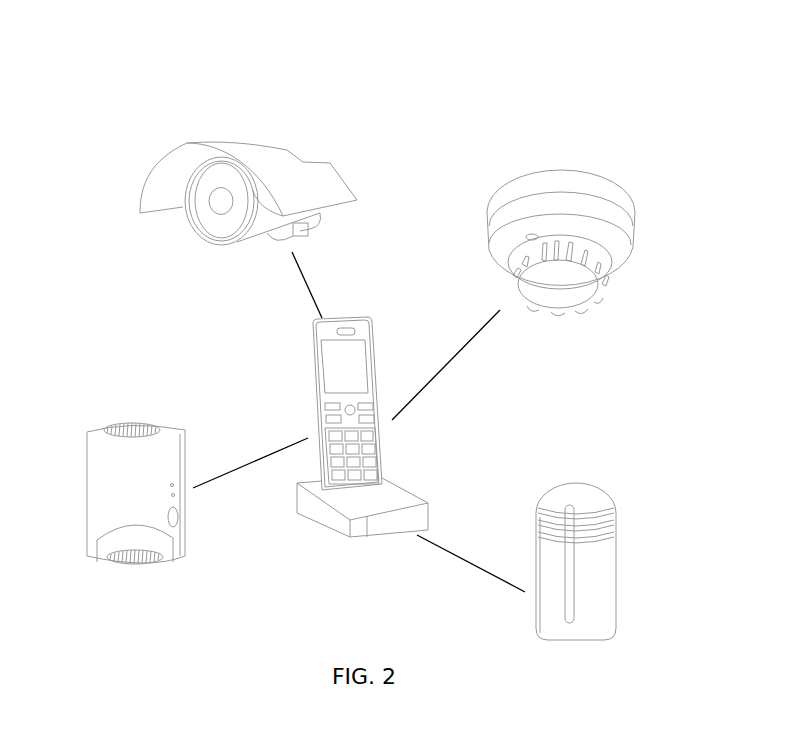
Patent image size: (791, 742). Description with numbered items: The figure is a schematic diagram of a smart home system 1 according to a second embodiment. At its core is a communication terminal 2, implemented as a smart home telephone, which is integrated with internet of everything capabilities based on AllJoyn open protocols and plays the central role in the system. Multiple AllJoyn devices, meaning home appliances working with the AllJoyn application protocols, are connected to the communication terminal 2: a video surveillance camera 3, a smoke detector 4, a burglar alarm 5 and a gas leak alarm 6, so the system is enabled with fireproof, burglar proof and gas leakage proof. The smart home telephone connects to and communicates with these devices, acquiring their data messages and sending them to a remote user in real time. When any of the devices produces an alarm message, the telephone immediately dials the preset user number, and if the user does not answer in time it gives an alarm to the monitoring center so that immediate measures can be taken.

The smart home system 1 is at (404, 77).
The communication terminal 2 is at (363, 317).
The video surveillance camera 3 is at (287, 152).
The smoke detector 4 is at (588, 173).
The burglar alarm 5 is at (567, 483).
The gas leak alarm 6 is at (120, 420).